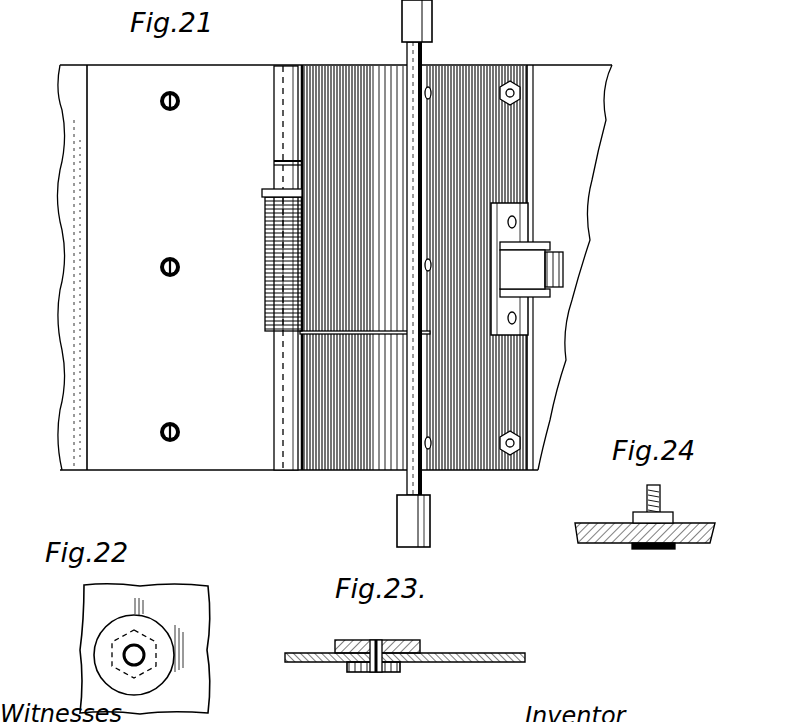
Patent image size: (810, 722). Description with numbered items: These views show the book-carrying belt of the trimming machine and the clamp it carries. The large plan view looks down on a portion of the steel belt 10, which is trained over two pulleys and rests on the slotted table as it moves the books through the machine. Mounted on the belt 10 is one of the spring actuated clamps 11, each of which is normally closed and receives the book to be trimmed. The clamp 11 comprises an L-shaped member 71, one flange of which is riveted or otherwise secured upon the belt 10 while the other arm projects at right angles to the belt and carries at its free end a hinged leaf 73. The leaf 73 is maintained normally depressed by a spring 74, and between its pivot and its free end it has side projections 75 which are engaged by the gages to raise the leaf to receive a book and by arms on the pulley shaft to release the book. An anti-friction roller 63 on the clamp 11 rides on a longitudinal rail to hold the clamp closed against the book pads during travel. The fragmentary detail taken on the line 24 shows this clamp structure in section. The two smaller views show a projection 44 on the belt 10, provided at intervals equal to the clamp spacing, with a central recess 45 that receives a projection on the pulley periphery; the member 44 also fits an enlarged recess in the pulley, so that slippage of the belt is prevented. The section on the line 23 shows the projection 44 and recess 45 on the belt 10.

In FIG. 21, the steel belt 10 is at (62, 382).
In FIG. 22, the steel belt 10 is at (200, 608).
In FIG. 23, the steel belt 10 is at (508, 654).
In FIG. 21, the spring actuated clamp 11 is at (302, 498).
In FIG. 22, the section line 23- 23 is at (64, 652).
In FIG. 21, the section line 24- 24 is at (503, 289).
In FIG. 22, the projection 44 is at (170, 636).
In FIG. 23, the projection 44 is at (420, 645).
In FIG. 22, the central recess 45 is at (138, 660).
In FIG. 23, the central recess 45 is at (378, 646).
In FIG. 21, the anti-friction roller 63 is at (560, 272).
In FIG. 21, the L-shaped member 71 is at (192, 273).
In FIG. 21, the hinged leaf 73 is at (316, 351).
In FIG. 24, the hinged leaf 73 is at (714, 535).
In FIG. 21, the spring 74 is at (272, 318).
In FIG. 21, the side projection 75 is at (432, 22).